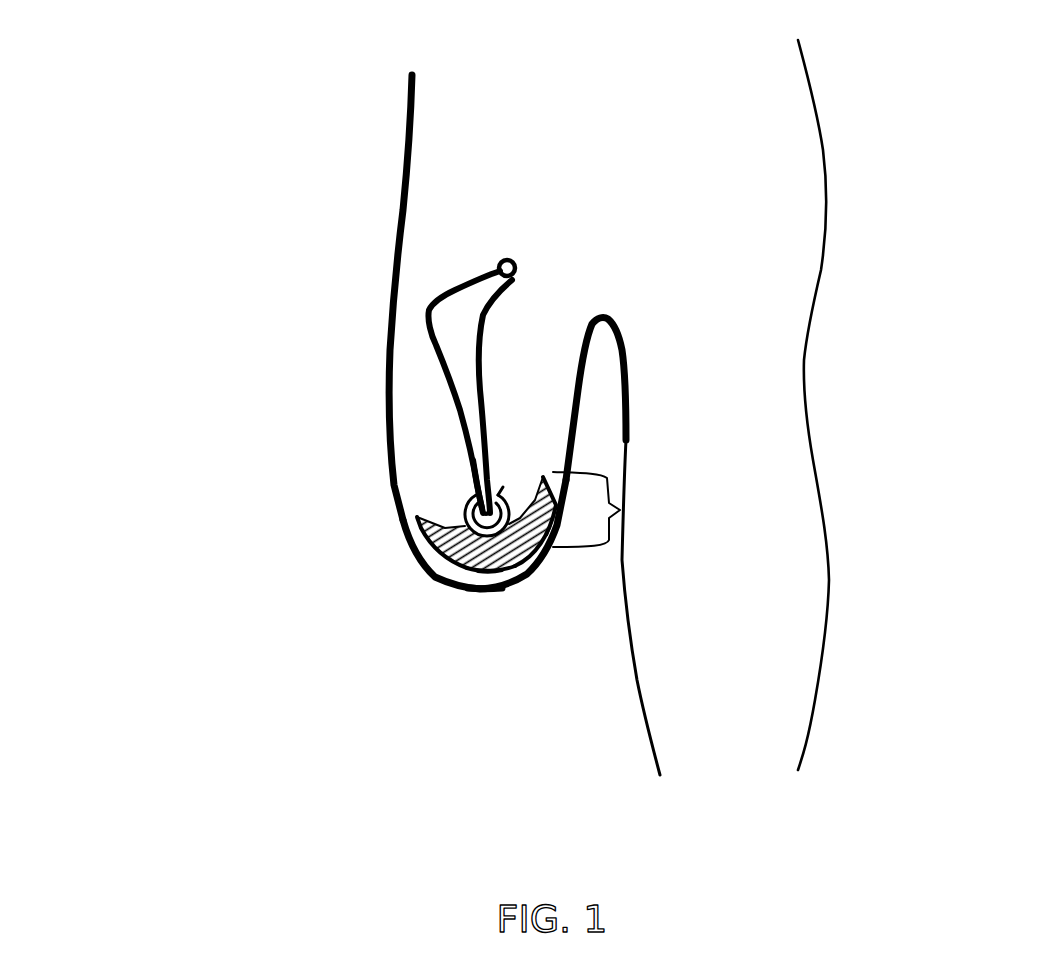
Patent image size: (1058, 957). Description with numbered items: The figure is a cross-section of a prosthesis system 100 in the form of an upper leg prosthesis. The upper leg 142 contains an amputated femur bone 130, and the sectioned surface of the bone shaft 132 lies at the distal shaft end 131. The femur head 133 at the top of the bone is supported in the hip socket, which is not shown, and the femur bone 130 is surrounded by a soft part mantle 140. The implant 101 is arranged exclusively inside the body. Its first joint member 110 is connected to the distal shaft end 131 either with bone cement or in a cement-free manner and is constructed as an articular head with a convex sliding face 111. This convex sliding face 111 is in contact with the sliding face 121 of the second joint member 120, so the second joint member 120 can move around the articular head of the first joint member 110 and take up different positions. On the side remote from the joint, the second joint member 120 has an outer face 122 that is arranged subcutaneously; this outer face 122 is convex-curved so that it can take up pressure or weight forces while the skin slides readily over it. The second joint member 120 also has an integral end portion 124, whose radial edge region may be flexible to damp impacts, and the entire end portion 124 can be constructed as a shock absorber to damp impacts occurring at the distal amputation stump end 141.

The prosthesis system 100 is at (309, 86).
The implant 101 is at (620, 510).
The first joint member 110 is at (410, 540).
The convex sliding face 111 is at (545, 523).
The second joint member 120 is at (487, 557).
The sliding face 121 is at (537, 560).
The outer face 122 is at (463, 580).
The end portion 124 is at (507, 587).
The femur bone 130 is at (460, 338).
The distal shaft end 131 is at (470, 507).
The bone shaft 132 is at (482, 447).
The femur head 133 is at (513, 261).
The soft part mantle 140 is at (420, 397).
The distal amputation stump end 141 is at (477, 573).
The upper leg 142 is at (548, 445).